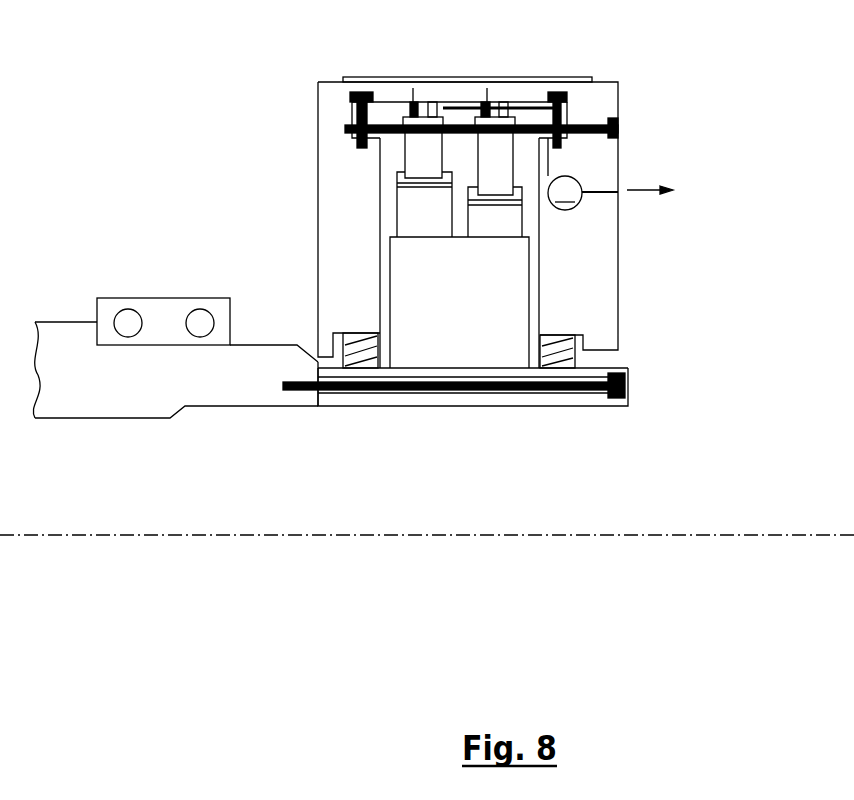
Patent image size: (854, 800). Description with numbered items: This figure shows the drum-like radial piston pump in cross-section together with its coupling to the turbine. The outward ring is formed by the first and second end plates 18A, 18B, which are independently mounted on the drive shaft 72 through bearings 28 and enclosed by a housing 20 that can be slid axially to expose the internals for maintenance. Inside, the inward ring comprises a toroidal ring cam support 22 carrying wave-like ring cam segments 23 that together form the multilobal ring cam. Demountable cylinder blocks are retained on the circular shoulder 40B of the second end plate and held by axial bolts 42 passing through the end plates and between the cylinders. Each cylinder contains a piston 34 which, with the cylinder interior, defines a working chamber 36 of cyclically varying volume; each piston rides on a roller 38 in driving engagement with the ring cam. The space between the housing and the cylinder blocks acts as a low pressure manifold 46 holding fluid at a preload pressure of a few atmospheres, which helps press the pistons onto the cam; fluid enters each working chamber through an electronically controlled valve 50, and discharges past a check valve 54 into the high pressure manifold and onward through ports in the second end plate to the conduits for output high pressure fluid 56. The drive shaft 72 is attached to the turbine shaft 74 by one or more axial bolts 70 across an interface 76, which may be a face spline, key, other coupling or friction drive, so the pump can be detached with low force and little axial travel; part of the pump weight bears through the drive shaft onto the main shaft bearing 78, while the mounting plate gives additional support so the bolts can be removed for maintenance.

The first end plate 18A is at (366, 289).
The second end plate 18B is at (594, 289).
The housing 20 is at (567, 77).
The ring cam support 22 is at (472, 327).
The ring cam segments 23 is at (407, 222).
The bearings 28 is at (557, 352).
The piston 34 is at (405, 152).
The working chamber 36 is at (357, 106).
The roller 38 is at (399, 182).
The circular shoulder 40B is at (620, 128).
The axial bolts 42 is at (563, 144).
The low pressure manifold 46 is at (388, 92).
The electronically controlled valve 50 is at (482, 102).
The check valve 54 is at (504, 102).
The conduits for output high pressure fluid 56 is at (610, 193).
The axial bolts 70 is at (583, 398).
The drive shaft 72 is at (595, 377).
The turbine shaft 74 is at (137, 392).
The interface 76 is at (318, 407).
The main shaft bearing 78 is at (133, 305).